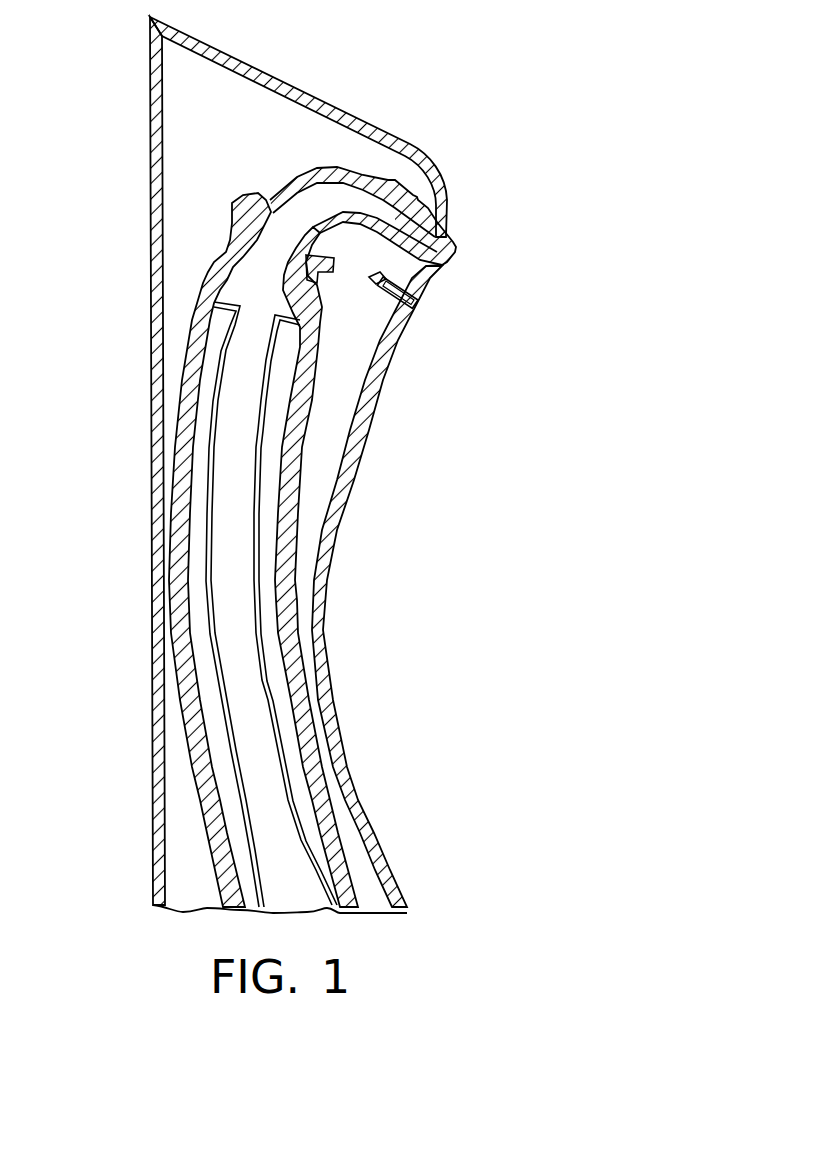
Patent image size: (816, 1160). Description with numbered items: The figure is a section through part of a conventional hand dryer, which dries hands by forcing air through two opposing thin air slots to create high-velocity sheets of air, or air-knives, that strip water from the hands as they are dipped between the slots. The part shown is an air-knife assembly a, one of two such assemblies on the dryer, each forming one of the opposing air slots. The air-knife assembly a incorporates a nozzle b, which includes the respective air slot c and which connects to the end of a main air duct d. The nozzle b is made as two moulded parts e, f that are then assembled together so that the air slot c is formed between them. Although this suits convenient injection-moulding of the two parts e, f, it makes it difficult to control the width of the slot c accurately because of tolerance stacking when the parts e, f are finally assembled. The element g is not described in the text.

The air-knife assembly a is at (90, 107).
The nozzle b is at (330, 150).
The air slot c is at (450, 255).
The main air duct d is at (237, 675).
The first moulded part e is at (305, 173).
The second moulded part f is at (360, 233).
The fastening pin g is at (436, 263).